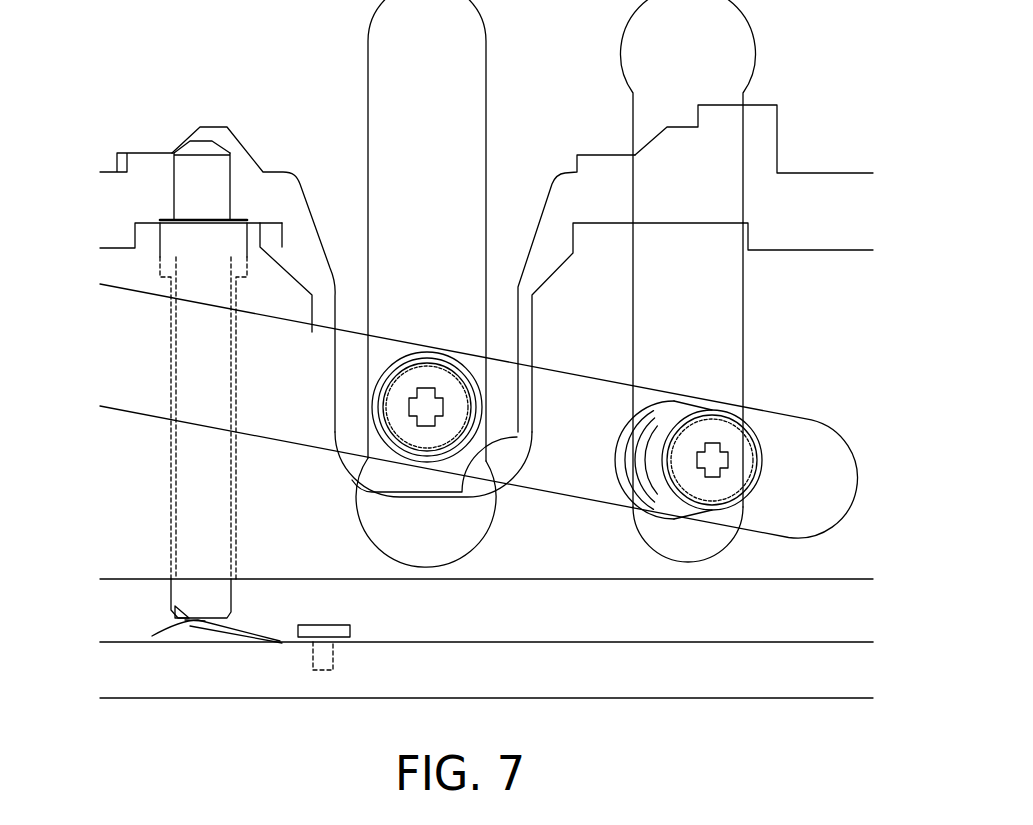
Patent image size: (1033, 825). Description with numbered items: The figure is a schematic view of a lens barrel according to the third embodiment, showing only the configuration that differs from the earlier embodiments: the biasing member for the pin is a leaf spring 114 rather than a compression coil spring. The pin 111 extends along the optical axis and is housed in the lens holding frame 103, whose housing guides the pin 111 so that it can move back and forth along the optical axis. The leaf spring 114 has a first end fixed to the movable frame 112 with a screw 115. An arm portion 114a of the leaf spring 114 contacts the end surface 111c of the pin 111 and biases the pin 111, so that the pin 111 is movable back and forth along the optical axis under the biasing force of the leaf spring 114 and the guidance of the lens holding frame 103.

The lens holding frame 103 is at (267, 562).
The pin 111 is at (186, 199).
The end surface 111c is at (108, 598).
The movable frame 112 is at (143, 685).
The leaf spring 114 is at (180, 625).
The arm portion 114a is at (181, 614).
The screw 115 is at (340, 624).